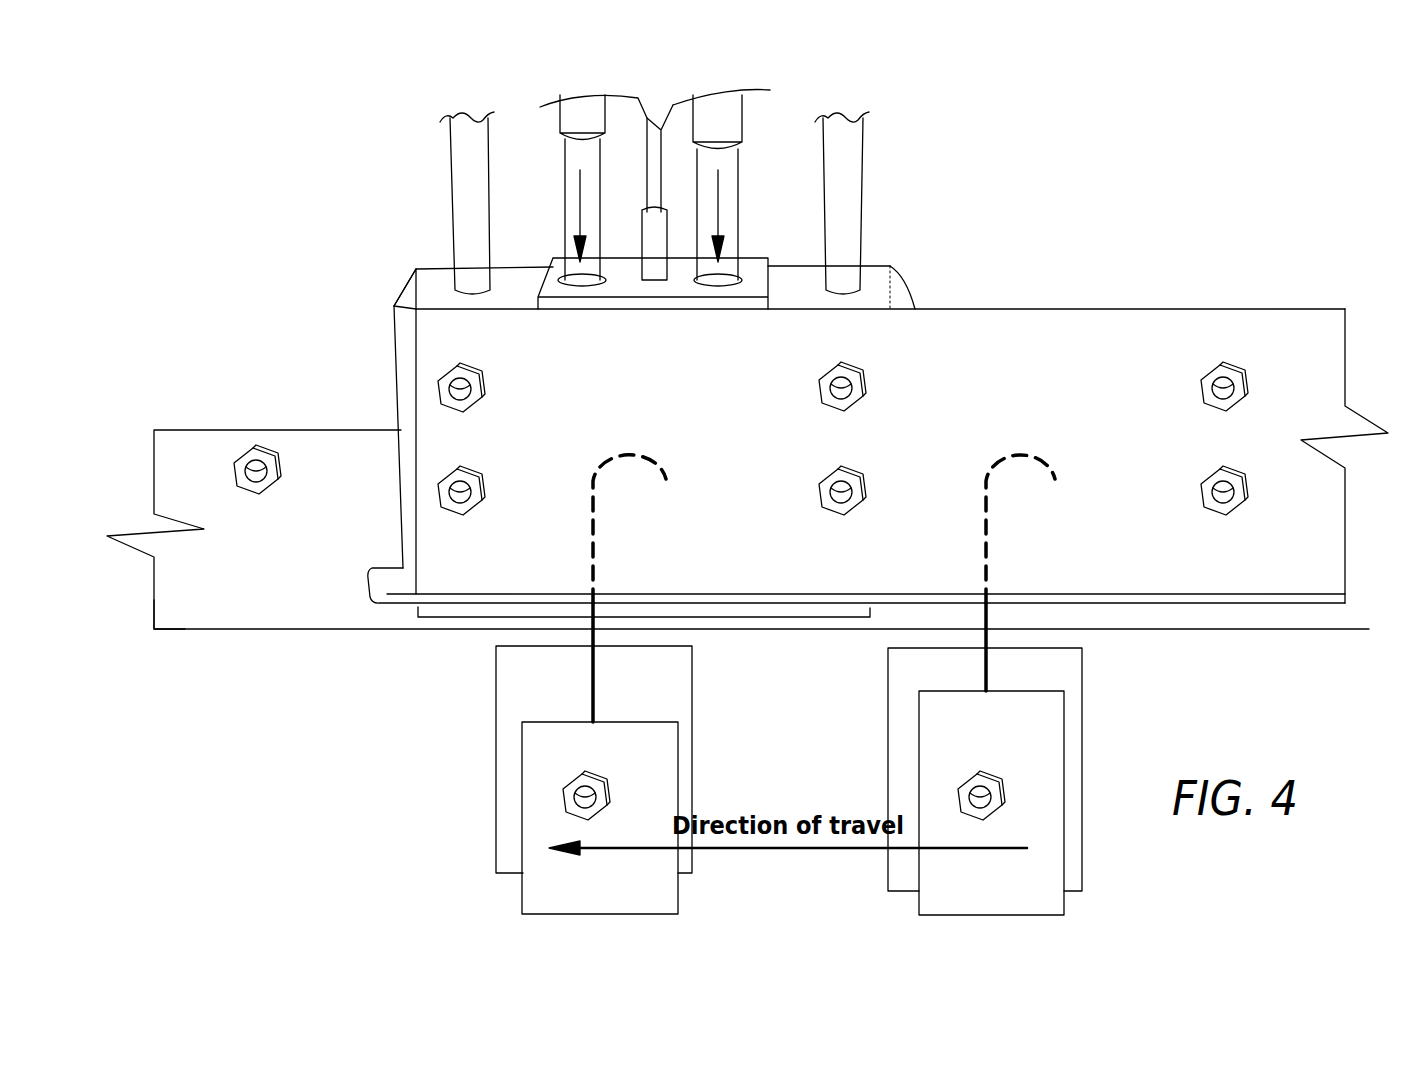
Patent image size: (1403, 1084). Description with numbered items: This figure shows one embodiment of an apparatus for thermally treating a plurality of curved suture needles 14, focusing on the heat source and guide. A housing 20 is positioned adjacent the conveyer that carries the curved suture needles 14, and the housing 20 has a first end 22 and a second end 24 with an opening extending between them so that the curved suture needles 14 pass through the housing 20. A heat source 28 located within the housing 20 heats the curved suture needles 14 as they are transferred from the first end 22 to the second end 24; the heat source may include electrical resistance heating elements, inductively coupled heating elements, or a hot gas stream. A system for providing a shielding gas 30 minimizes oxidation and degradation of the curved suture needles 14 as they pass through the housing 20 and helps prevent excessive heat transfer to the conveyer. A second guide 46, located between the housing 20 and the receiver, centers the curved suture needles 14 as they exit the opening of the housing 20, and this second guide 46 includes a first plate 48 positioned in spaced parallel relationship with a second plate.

The curved suture needles 14 is at (590, 692).
The housing 20 is at (877, 263).
The first end 22 is at (913, 285).
The second end 24 is at (405, 287).
The heat source 28 is at (562, 123).
The system for providing a shielding gas 30 is at (628, 617).
The second guide 46 is at (338, 627).
The first plate 48 is at (158, 611).